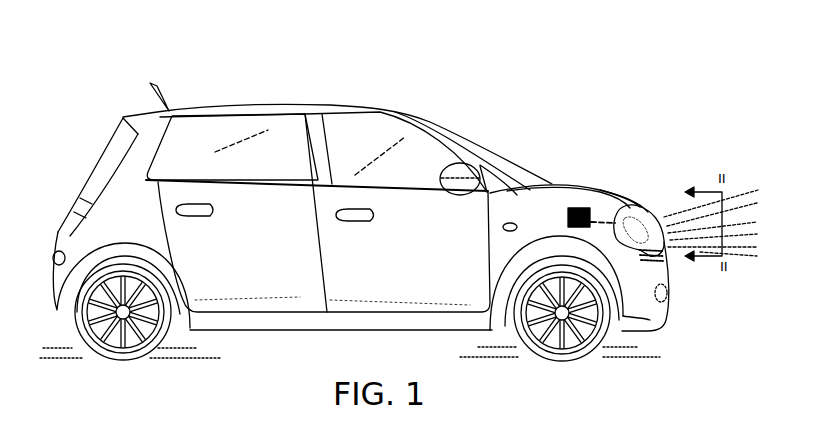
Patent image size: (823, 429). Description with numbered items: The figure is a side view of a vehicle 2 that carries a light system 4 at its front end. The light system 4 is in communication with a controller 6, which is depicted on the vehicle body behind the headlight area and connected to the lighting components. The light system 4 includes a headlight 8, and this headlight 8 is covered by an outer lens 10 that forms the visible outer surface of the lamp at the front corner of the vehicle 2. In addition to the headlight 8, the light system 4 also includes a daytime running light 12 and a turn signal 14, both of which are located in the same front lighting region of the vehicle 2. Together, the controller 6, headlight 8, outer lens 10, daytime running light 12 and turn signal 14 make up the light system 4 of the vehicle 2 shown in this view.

The vehicle 2 is at (512, 75).
The light system 4 is at (678, 165).
The controller 6 is at (578, 208).
The headlight 8 is at (646, 201).
The outer lens 10 is at (640, 218).
The daytime running light 12 is at (662, 255).
The turn signal 14 is at (636, 243).